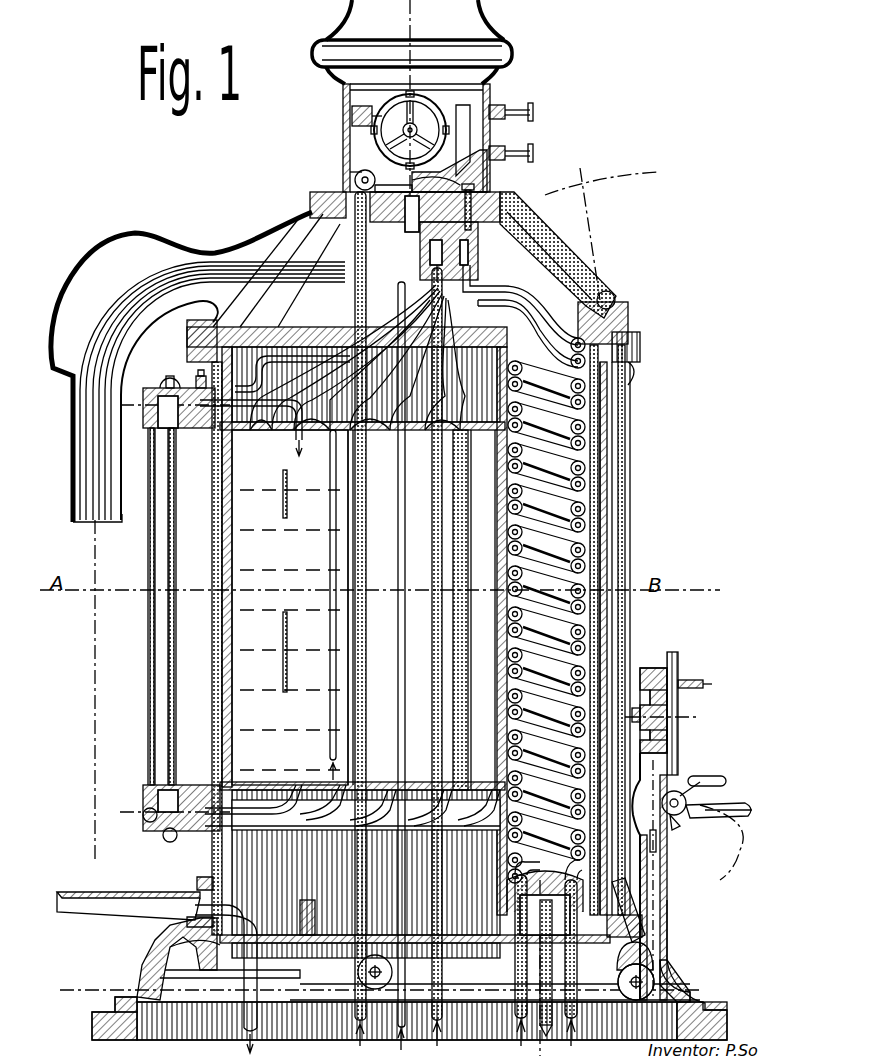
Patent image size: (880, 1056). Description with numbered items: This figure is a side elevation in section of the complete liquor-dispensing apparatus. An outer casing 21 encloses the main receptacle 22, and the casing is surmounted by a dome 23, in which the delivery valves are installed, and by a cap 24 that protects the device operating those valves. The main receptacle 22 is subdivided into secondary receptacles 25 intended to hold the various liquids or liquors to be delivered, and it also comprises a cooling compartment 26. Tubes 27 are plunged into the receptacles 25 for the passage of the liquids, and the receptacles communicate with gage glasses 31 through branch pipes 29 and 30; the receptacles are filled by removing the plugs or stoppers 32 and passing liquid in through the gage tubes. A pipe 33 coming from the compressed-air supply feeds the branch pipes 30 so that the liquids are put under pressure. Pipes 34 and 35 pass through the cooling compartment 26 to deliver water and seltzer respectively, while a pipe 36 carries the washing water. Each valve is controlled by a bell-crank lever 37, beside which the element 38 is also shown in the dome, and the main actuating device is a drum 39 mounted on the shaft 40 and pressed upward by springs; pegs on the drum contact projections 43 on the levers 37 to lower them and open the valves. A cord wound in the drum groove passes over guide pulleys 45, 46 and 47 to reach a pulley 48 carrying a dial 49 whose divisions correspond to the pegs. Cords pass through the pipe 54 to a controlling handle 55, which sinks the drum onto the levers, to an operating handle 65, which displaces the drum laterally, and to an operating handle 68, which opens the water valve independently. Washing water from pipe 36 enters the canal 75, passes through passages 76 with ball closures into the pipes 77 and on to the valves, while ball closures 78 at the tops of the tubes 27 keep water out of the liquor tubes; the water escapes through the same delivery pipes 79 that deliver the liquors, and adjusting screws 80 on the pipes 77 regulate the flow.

The outer casing 21 is at (613, 410).
The main receptacle 22 is at (600, 462).
The dome 23 is at (545, 250).
The cap 24 is at (487, 54).
The secondary receptacles 25 is at (250, 456).
The cooling compartment 26 is at (590, 502).
The tubes 27 is at (410, 352).
The branch pipes 29 is at (345, 820).
The branch pipes 30 is at (278, 420).
The gage glasses 31 is at (170, 556).
The plugs or stoppers 32 is at (176, 386).
The compressed-air pipe 33 is at (338, 378).
The water pipe 34 is at (520, 990).
The seltzer pipe 35 is at (578, 990).
The washing water pipe 36 is at (438, 868).
The bell-crank lever 37 is at (498, 178).
The adjusting screws 38 is at (532, 110).
The drum 39 is at (380, 118).
The shaft 40 is at (405, 131).
The projections 43 is at (449, 171).
The guide pulley 45 is at (356, 178).
The guide pulley 46 is at (370, 978).
The guide pulley 47 is at (648, 975).
The pulley 48 is at (676, 672).
The dial 49 is at (678, 730).
The pipe 54 is at (312, 203).
The controlling handle 55 is at (735, 808).
The operating handle 65 is at (658, 842).
The operating handle 68 is at (662, 800).
The canal 75 is at (442, 270).
The passages 76 is at (430, 272).
The pipes 77 is at (520, 298).
The ball closures 78 is at (528, 316).
The pipes 79 is at (300, 268).
The adjusting screws 80 is at (472, 204).